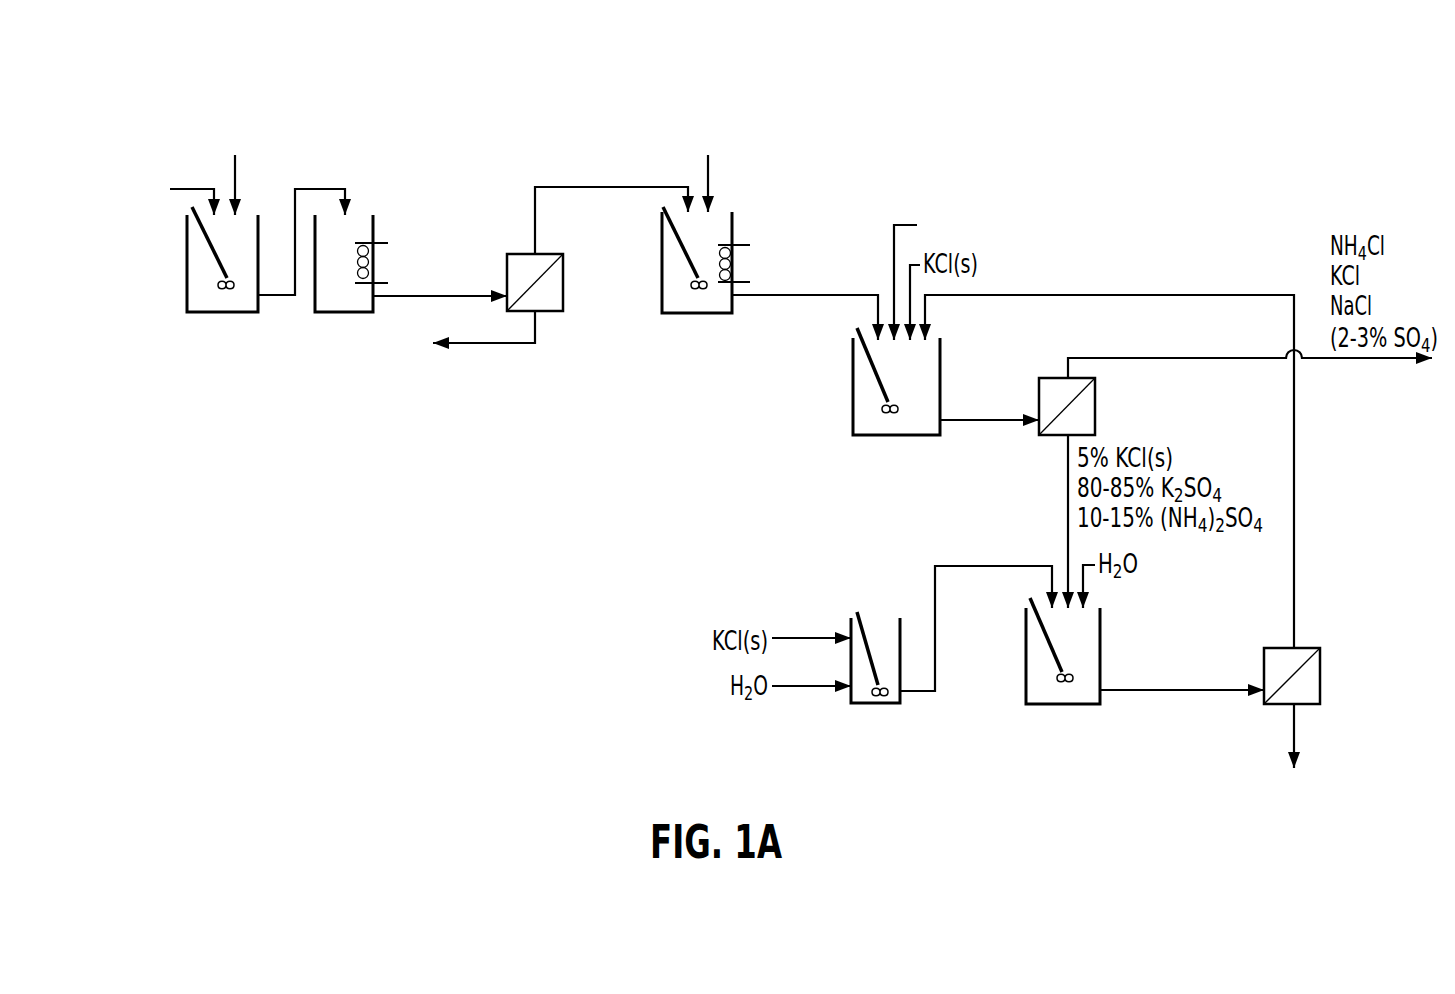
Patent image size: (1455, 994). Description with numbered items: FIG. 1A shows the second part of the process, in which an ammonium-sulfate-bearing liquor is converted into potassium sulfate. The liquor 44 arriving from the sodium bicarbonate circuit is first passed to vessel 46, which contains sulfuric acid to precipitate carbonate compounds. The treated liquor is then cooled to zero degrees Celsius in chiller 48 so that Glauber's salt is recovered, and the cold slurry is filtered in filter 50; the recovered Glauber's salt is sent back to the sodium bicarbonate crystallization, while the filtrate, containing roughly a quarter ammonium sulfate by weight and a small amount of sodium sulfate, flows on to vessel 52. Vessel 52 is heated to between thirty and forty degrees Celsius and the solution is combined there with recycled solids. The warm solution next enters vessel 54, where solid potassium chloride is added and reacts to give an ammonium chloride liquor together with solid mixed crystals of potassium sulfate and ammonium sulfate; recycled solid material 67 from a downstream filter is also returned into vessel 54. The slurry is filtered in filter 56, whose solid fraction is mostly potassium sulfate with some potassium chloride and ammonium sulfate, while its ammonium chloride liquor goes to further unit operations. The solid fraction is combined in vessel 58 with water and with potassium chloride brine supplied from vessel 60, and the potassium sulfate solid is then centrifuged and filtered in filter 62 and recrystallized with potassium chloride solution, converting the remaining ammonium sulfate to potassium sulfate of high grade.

The liquor 44 is at (188, 190).
The vessel 46 is at (210, 313).
The chiller 48 is at (315, 303).
The filter 50 is at (563, 283).
The vessel 52 is at (700, 313).
The vessel 54 is at (853, 400).
The filter 56 is at (1095, 397).
The vessel 58 is at (1026, 628).
The vessel 60 is at (872, 705).
The filter 62 is at (1305, 648).
The solid material 67 is at (917, 225).